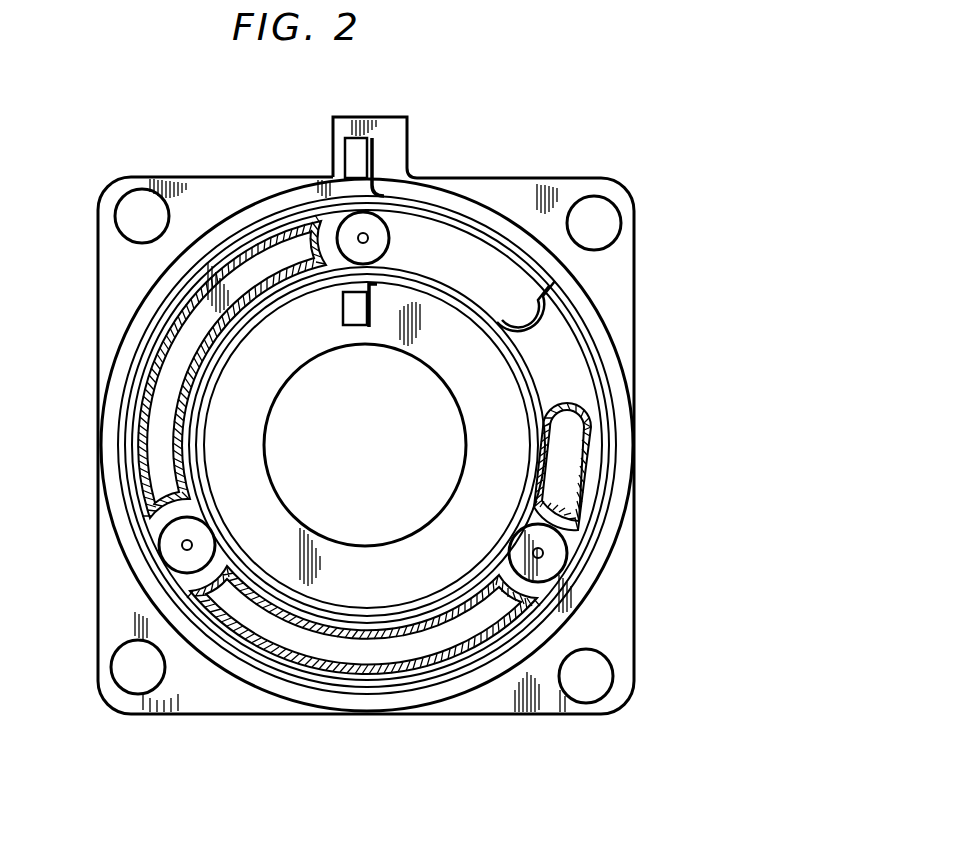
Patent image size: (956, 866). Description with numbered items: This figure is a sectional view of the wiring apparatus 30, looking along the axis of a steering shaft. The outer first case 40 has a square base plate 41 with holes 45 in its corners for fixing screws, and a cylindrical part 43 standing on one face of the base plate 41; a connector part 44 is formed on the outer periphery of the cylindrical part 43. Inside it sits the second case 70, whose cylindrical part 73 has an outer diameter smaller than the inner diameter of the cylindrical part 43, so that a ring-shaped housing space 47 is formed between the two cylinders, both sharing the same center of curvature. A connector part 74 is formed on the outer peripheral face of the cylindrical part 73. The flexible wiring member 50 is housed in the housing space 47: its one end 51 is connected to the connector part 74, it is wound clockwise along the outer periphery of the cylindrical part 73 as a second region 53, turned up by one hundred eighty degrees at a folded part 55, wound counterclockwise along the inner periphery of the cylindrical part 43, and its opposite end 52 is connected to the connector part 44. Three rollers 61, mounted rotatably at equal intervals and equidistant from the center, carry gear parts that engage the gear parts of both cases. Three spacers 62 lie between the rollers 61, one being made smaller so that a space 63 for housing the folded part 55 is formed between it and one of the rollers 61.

The wiring apparatus 30 is at (672, 283).
The first case 40 is at (488, 207).
The base plate 41 is at (185, 694).
The cylindrical part 43 is at (598, 325).
The connector part 44 is at (340, 155).
The holes 45 is at (128, 217).
The housing space 47 is at (153, 362).
The flexible wiring member 50 is at (603, 372).
The one end 51 is at (372, 313).
The opposite end 52 is at (377, 162).
The second region 53 is at (203, 400).
The folded part 55 is at (543, 338).
The rollers 61 is at (381, 236).
The spacers 62 is at (238, 247).
The space 63 is at (512, 305).
The second case 70 is at (490, 433).
The cylindrical part 73 is at (500, 402).
The connector part 74 is at (355, 318).